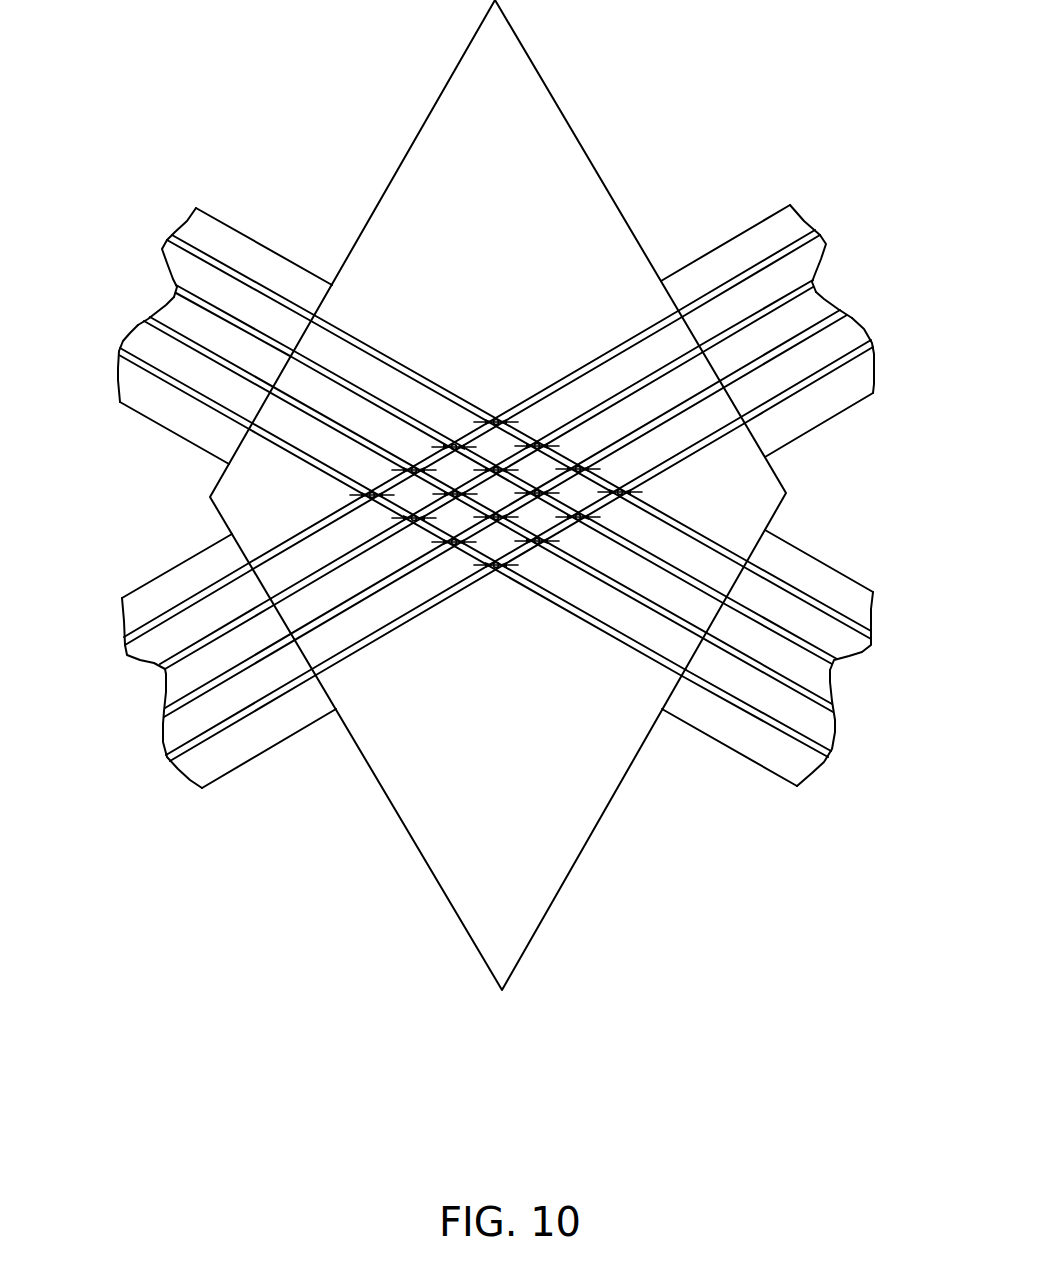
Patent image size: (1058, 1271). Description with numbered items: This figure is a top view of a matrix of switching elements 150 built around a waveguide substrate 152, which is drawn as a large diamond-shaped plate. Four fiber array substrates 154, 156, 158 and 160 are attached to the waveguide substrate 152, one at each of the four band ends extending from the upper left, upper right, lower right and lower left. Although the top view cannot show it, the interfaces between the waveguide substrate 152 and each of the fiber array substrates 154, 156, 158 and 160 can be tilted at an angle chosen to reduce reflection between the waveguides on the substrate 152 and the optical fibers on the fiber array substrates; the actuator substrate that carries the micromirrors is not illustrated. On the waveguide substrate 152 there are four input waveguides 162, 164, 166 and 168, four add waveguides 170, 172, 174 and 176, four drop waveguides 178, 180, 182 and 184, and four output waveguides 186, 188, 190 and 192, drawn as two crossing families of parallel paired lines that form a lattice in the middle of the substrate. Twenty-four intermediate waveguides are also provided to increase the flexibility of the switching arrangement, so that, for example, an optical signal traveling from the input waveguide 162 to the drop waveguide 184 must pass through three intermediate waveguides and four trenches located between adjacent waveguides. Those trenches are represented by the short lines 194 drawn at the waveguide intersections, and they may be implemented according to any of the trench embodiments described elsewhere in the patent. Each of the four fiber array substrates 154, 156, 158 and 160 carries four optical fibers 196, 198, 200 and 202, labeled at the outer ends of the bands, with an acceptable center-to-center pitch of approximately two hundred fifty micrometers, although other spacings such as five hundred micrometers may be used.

The woven conductor array assembly 150 is at (822, 58).
The waveguide substrate 152 is at (605, 186).
The fiber array substrate 154 is at (258, 241).
The fiber array substrate 156 is at (757, 224).
The fiber array substrate 158 is at (838, 571).
The fiber array substrate 160 is at (166, 573).
The input waveguide 162 is at (338, 667).
The input waveguide 164 is at (383, 540).
The input waveguide 166 is at (402, 574).
The input waveguide 168 is at (334, 515).
The add waveguide 170 is at (296, 452).
The add waveguide 172 is at (333, 370).
The add waveguide 174 is at (348, 342).
The add waveguide 176 is at (402, 362).
The drop waveguide 178 is at (583, 367).
The drop waveguide 180 is at (650, 375).
The drop waveguide 182 is at (675, 320).
The drop waveguide 184 is at (692, 450).
The output waveguide 186 is at (657, 513).
The output waveguide 188 is at (592, 577).
The output waveguide 190 is at (614, 540).
The output waveguide 192 is at (662, 663).
The lines representing trenches 194 is at (550, 440).
The optical fiber 196 is at (124, 332).
The optical fiber 198 is at (172, 305).
The optical fiber 200 is at (180, 247).
The optical fiber 202 is at (188, 222).